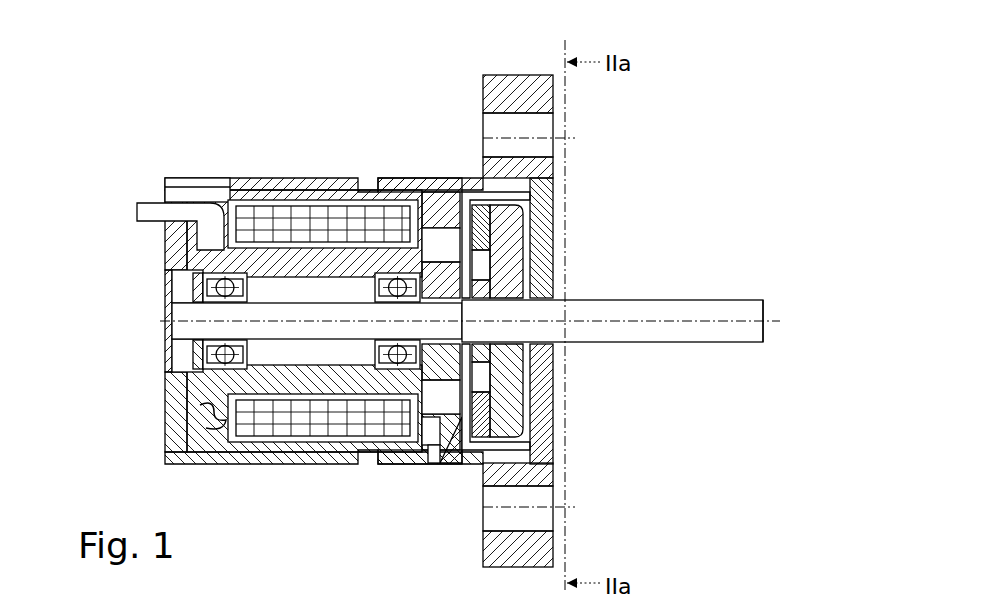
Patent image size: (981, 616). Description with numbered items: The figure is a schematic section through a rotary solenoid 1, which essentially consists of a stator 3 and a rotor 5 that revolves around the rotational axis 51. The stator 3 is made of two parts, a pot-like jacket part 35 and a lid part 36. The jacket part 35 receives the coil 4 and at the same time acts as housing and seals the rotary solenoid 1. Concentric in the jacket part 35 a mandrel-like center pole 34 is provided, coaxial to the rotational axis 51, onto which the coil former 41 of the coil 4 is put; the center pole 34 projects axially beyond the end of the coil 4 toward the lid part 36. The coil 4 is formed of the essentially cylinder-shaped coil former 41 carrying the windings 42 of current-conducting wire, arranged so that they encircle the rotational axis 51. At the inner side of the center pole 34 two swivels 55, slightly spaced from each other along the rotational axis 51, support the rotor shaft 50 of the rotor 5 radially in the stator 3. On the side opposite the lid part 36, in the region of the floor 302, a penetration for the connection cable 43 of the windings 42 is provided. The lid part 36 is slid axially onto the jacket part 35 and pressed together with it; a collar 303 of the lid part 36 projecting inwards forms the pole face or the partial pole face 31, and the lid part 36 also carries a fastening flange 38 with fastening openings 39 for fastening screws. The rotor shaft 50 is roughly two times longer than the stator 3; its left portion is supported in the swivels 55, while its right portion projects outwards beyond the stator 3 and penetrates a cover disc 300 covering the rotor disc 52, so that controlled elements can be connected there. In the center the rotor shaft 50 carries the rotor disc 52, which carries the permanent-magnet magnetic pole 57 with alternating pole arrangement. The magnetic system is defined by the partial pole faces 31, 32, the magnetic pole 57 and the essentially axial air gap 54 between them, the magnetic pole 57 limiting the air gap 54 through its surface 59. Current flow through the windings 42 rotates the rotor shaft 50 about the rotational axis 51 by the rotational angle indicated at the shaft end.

The rotary solenoid 1 is at (150, 98).
The stator 3 is at (325, 502).
The coil 4 is at (300, 200).
The rotor 5 is at (642, 235).
The partial pole face 31 is at (466, 255).
The partial pole face 32 is at (553, 282).
The center pole 34 is at (440, 192).
The jacket part 35 is at (265, 463).
The lid part 36 is at (450, 452).
The fastening flange 38 is at (556, 95).
The fastening openings 39 is at (556, 135).
The coil former 41 is at (432, 198).
The windings 42 is at (243, 196).
The connection cable 43 is at (137, 210).
The rotor shaft 50 is at (688, 303).
The rotational axis 51 is at (748, 310).
The rotor disc 52 is at (556, 212).
The air gap 54 is at (457, 452).
The swivels 55 is at (195, 368).
The magnetic pole 57 is at (556, 242).
The surface 59 is at (447, 452).
The cover disc 300 is at (556, 283).
The floor 302 is at (160, 188).
The collar 303 is at (527, 410).